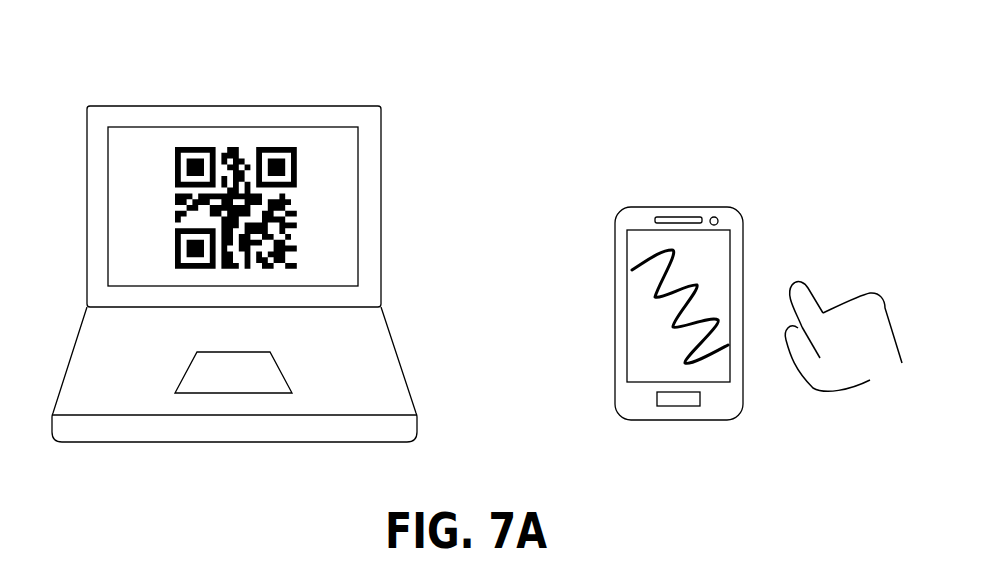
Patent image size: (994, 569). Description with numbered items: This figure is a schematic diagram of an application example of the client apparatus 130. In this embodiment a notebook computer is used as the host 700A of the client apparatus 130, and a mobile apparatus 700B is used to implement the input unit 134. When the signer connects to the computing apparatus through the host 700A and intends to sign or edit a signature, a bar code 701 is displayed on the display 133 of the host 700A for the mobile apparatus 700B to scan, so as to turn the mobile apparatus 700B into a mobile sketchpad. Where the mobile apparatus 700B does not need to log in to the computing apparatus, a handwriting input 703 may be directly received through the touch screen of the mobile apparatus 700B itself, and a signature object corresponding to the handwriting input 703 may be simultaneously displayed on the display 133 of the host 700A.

The client apparatus 130 is at (101, 80).
The host 700A is at (185, 442).
The display 133 is at (327, 142).
The bar code 701 is at (230, 150).
The mobile apparatus 700B is at (660, 207).
The input unit 134 is at (711, 313).
The handwriting input 703 is at (700, 292).